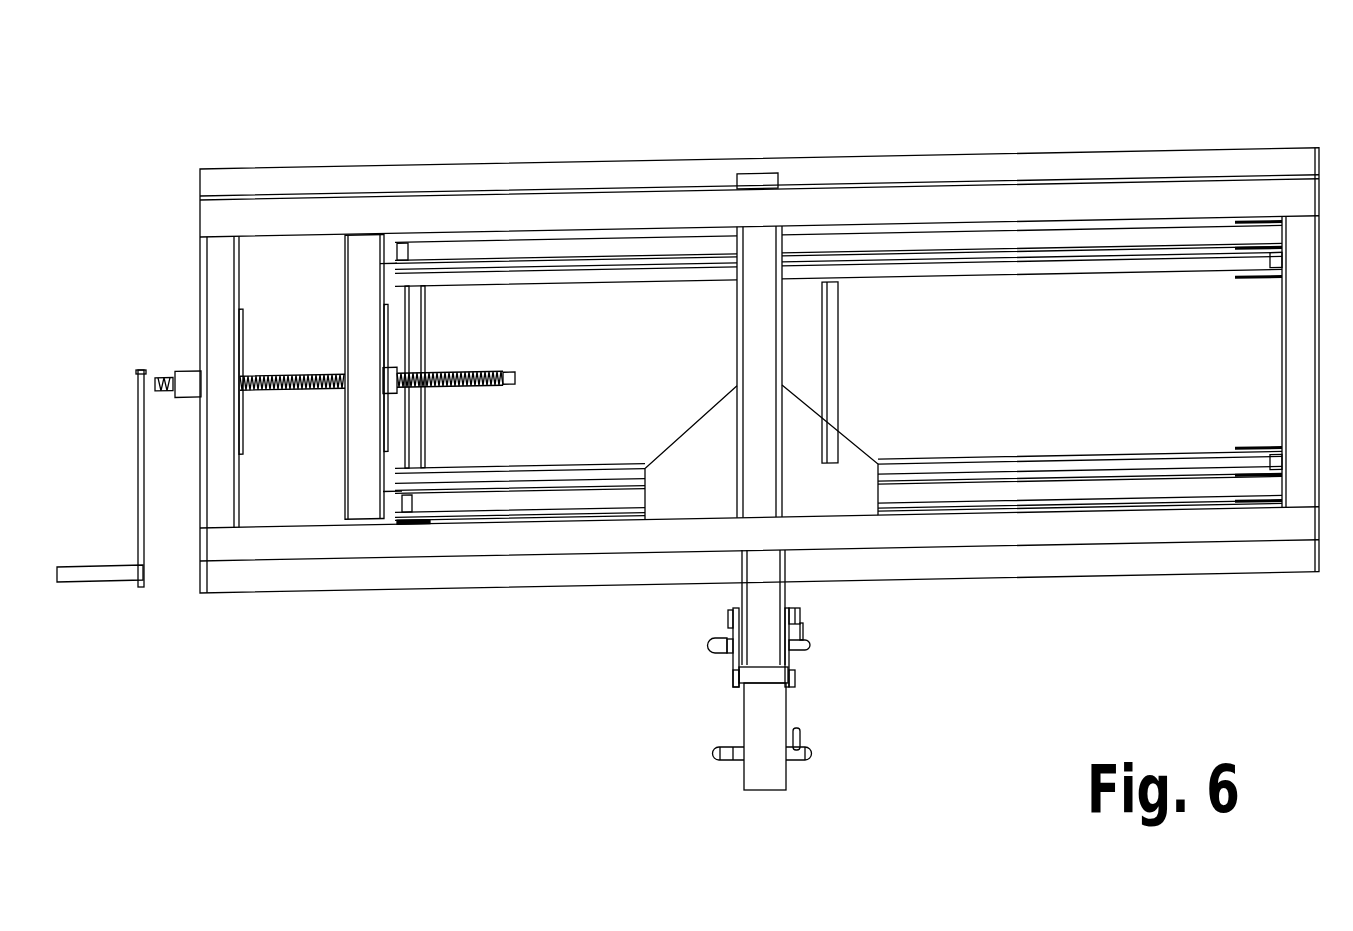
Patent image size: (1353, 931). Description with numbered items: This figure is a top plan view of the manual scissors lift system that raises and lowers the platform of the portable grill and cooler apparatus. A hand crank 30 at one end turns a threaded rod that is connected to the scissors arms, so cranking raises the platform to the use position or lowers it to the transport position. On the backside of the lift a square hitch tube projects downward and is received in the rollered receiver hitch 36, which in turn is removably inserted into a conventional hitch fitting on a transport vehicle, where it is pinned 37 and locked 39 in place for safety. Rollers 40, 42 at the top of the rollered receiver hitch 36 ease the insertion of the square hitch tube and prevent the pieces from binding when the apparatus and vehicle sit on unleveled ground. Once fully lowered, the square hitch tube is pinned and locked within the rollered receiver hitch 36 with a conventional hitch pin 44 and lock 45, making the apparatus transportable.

The hand crank 30 is at (140, 480).
The rollered receiver hitch 36 is at (779, 750).
The pin 37 is at (815, 755).
The lock 39 is at (798, 732).
The roller 40 is at (757, 677).
The roller 42 is at (733, 612).
The hitch pin 44 is at (716, 644).
The lock 45 is at (803, 633).